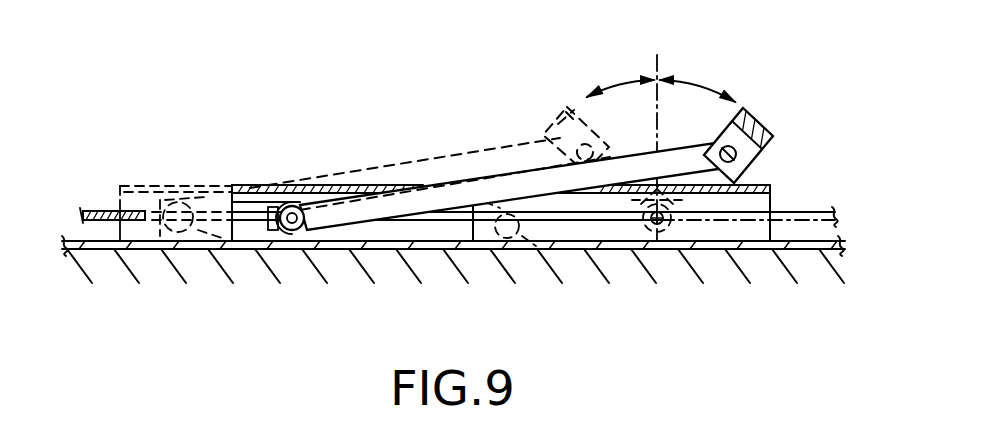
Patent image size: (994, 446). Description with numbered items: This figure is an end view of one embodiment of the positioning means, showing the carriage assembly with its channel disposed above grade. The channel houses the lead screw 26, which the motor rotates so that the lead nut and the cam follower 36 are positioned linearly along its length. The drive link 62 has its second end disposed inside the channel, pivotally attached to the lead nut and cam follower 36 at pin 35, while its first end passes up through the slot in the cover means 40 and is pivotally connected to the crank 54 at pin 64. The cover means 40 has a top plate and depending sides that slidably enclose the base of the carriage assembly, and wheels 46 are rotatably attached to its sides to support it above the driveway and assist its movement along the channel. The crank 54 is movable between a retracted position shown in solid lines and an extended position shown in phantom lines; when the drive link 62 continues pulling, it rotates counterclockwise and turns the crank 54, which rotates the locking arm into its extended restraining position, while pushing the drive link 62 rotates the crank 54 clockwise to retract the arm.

The lead screw 26 is at (98, 208).
The cam follower 36 is at (292, 203).
The pin 35 is at (283, 242).
The drive link 62 is at (432, 193).
The pin 64 is at (756, 108).
The crank 54 is at (768, 123).
The cover means 40 is at (768, 187).
The wheels 46 is at (563, 262).